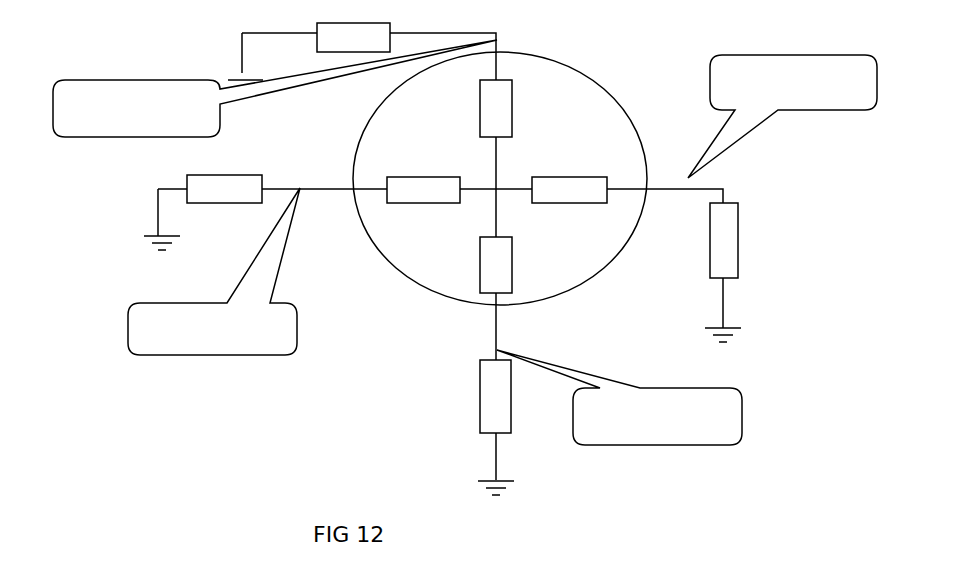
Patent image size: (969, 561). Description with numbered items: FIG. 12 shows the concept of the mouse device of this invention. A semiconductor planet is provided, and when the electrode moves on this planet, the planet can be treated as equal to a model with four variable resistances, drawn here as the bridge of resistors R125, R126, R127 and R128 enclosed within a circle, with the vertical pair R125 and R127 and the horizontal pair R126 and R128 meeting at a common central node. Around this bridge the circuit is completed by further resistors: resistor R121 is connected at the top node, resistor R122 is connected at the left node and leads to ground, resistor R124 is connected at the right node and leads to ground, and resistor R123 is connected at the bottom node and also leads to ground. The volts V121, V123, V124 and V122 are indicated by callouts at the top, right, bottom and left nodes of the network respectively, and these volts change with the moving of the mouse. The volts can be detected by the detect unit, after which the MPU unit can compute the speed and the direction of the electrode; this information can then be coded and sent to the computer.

The resistor R121 is at (353, 27).
The resistor R122 is at (224, 189).
The resistor R123 is at (450, 396).
The resistor R124 is at (752, 240).
The resistor R125 is at (523, 108).
The resistor R126 is at (423, 178).
The resistor R127 is at (524, 265).
The resistor R128 is at (569, 178).
The volt V121 is at (275, 88).
The volt V122 is at (214, 271).
The volt V123 is at (782, 116).
The volt V124 is at (619, 397).